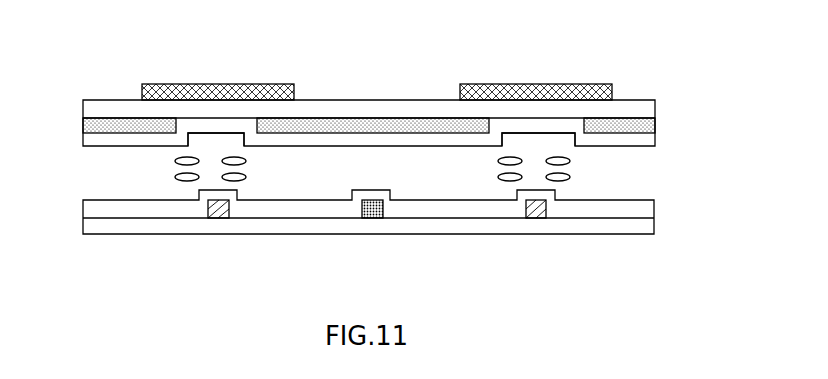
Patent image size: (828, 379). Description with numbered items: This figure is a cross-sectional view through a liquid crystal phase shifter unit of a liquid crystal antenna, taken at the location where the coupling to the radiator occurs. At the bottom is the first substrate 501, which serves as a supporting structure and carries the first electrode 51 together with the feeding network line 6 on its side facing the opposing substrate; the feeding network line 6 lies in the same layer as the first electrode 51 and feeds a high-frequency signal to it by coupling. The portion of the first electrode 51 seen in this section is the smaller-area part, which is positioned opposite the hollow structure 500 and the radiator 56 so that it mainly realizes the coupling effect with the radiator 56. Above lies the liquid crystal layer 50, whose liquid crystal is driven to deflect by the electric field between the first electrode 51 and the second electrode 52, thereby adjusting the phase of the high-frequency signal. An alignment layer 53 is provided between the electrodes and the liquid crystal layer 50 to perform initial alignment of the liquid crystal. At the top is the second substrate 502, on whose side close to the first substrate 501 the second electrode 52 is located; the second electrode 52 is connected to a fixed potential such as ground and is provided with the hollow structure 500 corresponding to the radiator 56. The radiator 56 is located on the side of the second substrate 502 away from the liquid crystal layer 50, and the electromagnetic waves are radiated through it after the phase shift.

The feeding network line 6 is at (375, 218).
The liquid crystal layer 50 is at (303, 177).
The first electrode 51 is at (221, 212).
The second electrode 52 is at (120, 123).
The alignment layer 53 is at (593, 207).
The radiator 56 is at (238, 92).
The hollow structure 500 is at (198, 125).
The first substrate 501 is at (442, 227).
The second substrate 502 is at (382, 107).